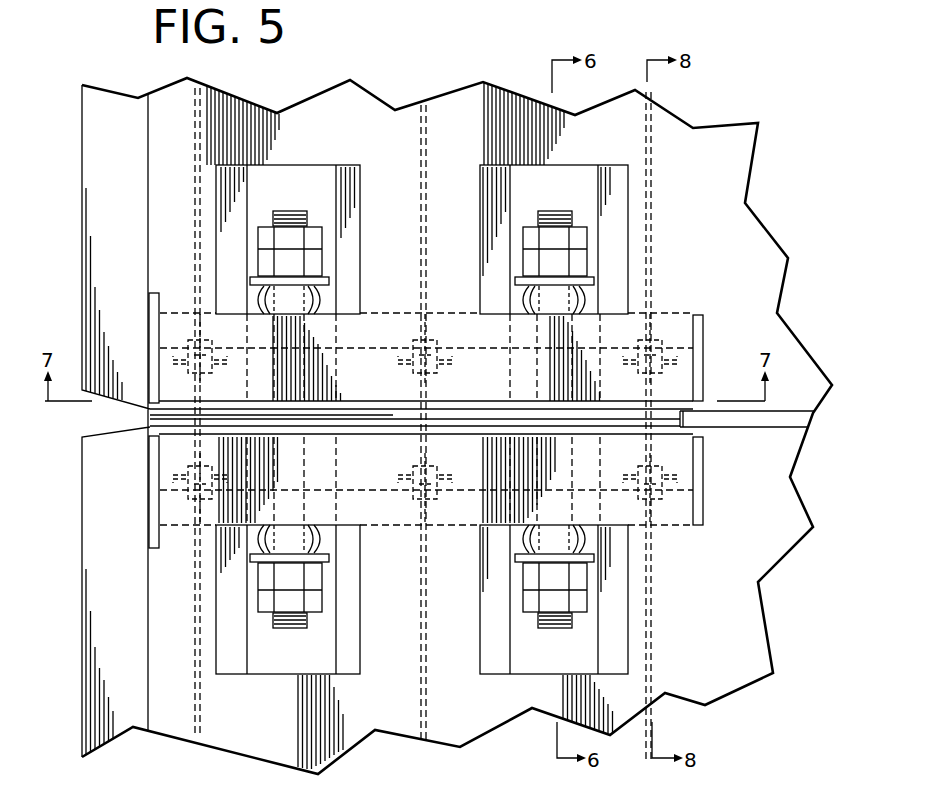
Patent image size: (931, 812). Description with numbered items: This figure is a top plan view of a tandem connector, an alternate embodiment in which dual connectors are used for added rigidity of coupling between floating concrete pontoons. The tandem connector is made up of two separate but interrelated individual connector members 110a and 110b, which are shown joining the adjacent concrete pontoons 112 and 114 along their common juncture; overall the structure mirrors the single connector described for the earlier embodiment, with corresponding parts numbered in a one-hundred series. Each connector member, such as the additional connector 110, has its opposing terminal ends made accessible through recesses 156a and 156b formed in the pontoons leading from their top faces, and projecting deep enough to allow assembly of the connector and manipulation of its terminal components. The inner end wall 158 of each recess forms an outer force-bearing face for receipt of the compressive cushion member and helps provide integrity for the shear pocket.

The connector member 110 is at (731, 244).
The first connector member 110a is at (351, 138).
The second connector member 110b is at (614, 149).
The concrete pontoon 112 is at (462, 150).
The concrete pontoon 114 is at (466, 714).
The recess 156a is at (325, 135).
The recess 156b is at (615, 213).
The inner end wall 158 is at (448, 328).